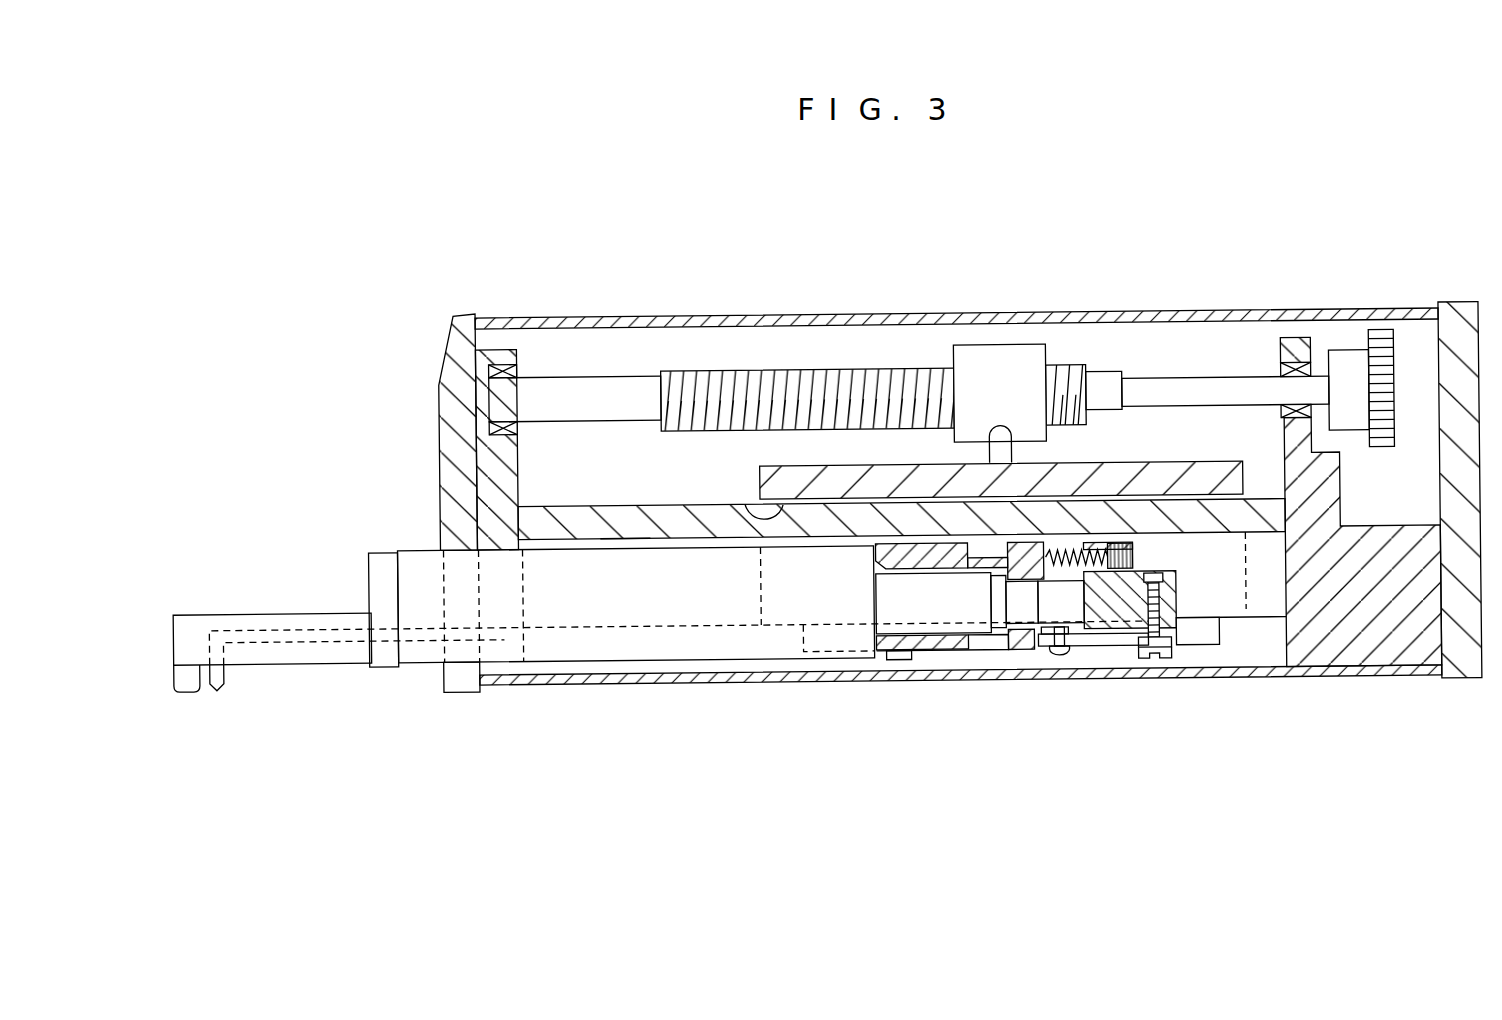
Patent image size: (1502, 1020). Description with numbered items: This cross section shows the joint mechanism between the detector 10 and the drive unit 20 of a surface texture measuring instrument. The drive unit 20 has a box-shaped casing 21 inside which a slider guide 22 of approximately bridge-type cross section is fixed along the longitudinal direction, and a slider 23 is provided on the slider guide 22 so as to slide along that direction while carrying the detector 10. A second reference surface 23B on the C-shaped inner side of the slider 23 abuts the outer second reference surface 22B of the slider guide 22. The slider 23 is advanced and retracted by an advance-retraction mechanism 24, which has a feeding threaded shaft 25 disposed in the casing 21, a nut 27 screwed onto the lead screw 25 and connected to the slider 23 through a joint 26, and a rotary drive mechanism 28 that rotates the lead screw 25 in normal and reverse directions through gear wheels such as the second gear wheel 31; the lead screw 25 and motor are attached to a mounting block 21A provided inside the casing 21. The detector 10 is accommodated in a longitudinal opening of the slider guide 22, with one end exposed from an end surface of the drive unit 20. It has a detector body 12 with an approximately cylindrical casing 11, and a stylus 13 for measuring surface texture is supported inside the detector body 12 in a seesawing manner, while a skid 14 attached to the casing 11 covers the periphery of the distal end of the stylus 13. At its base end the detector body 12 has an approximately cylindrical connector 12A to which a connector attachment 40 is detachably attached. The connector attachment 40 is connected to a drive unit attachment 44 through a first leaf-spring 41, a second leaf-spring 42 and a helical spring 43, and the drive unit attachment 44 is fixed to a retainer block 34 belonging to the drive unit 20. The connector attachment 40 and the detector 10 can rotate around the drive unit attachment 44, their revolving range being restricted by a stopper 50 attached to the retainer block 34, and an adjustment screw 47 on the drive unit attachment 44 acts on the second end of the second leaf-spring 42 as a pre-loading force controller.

The detector 10 is at (288, 578).
The casing 11 is at (413, 545).
The detector body 12 is at (370, 541).
The connector 12A is at (937, 602).
The stylus 13 is at (222, 682).
The skid 14 is at (185, 687).
The drive unit 20 is at (1303, 300).
The casing 21 is at (872, 312).
The mounting block 21A is at (1363, 637).
The slider guide 22 is at (560, 500).
The second reference surface 22B is at (620, 500).
The slider 23 is at (1178, 475).
The second reference surface 23B is at (762, 502).
The advance-retraction mechanism 24 is at (1140, 356).
The feeding threaded shaft 25 is at (745, 366).
The joint 26 is at (1015, 440).
The nut 27 is at (983, 345).
The rotary drive mechanism 28 is at (1400, 341).
The second gear wheel 31 is at (1382, 333).
The retainer block 34 is at (802, 630).
The connector attachment 40 is at (1020, 650).
The first leaf-spring 41 is at (1115, 651).
The second leaf-spring 42 is at (1095, 653).
The helical spring 43 is at (1082, 544).
The drive unit attachment 44 is at (1135, 585).
The adjustment screw 47 is at (1163, 659).
The stopper 50 is at (897, 659).